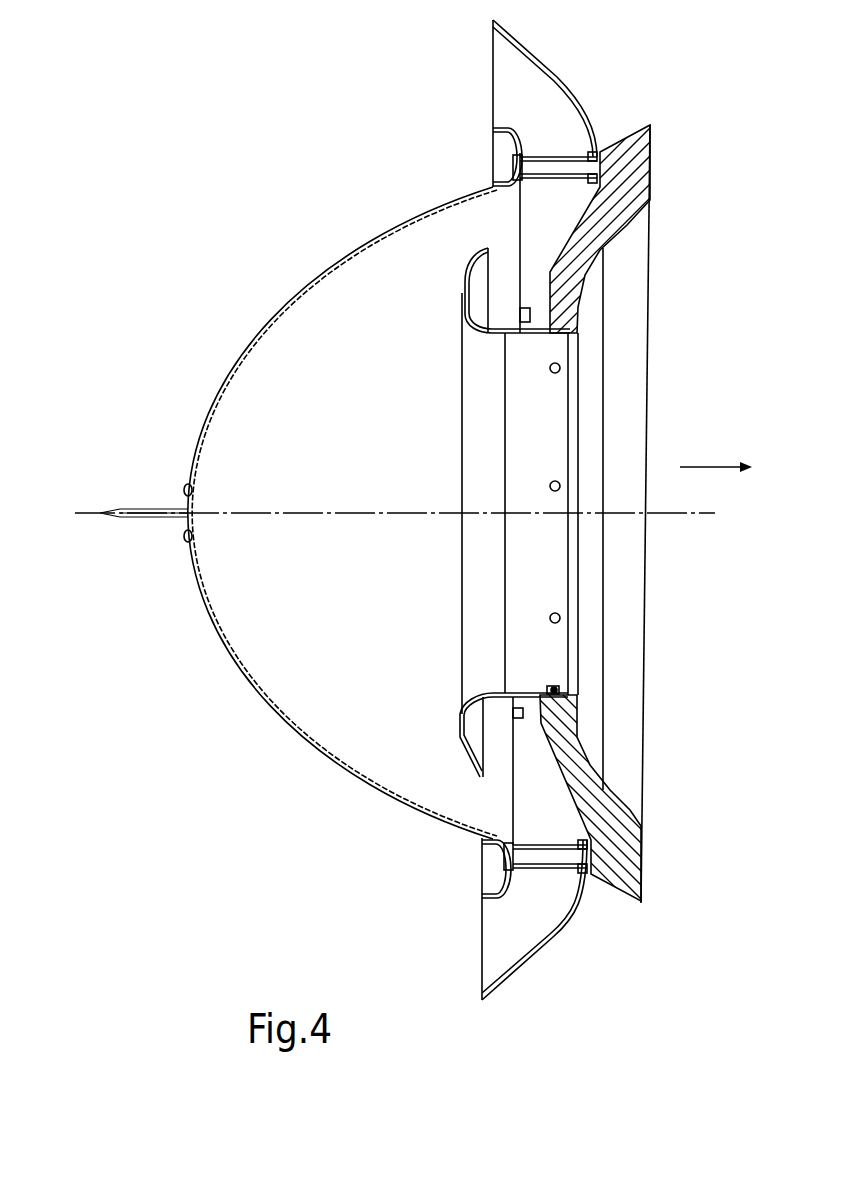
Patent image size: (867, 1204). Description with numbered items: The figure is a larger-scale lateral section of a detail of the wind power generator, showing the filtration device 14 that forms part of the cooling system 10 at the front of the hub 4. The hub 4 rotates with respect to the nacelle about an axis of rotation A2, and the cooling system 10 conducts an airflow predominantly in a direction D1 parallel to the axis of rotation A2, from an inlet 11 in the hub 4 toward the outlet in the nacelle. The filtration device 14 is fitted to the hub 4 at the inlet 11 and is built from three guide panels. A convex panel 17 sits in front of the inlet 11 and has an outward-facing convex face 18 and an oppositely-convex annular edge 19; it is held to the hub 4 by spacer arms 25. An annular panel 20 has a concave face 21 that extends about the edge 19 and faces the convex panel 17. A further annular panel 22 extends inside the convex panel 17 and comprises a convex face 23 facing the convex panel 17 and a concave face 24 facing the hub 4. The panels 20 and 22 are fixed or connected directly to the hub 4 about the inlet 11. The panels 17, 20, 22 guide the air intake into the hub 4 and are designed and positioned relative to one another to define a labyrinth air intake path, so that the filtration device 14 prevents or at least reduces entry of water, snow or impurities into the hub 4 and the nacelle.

The hub 4 is at (594, 514).
The cooling system 10 is at (322, 828).
The inlet 11 is at (553, 559).
The filtration device 14 is at (298, 493).
The convex panel 17 is at (279, 710).
The convex face 18 is at (249, 682).
The annular edge 19 is at (500, 877).
The annular panel 20 is at (522, 102).
The concave face 21 is at (573, 100).
The annular panel 22 is at (471, 499).
The convex face 23 is at (460, 292).
The concave face 24 is at (480, 280).
The spacer arms 25 is at (555, 167).
The direction D1 is at (711, 466).
The axis of rotation A2 is at (690, 514).